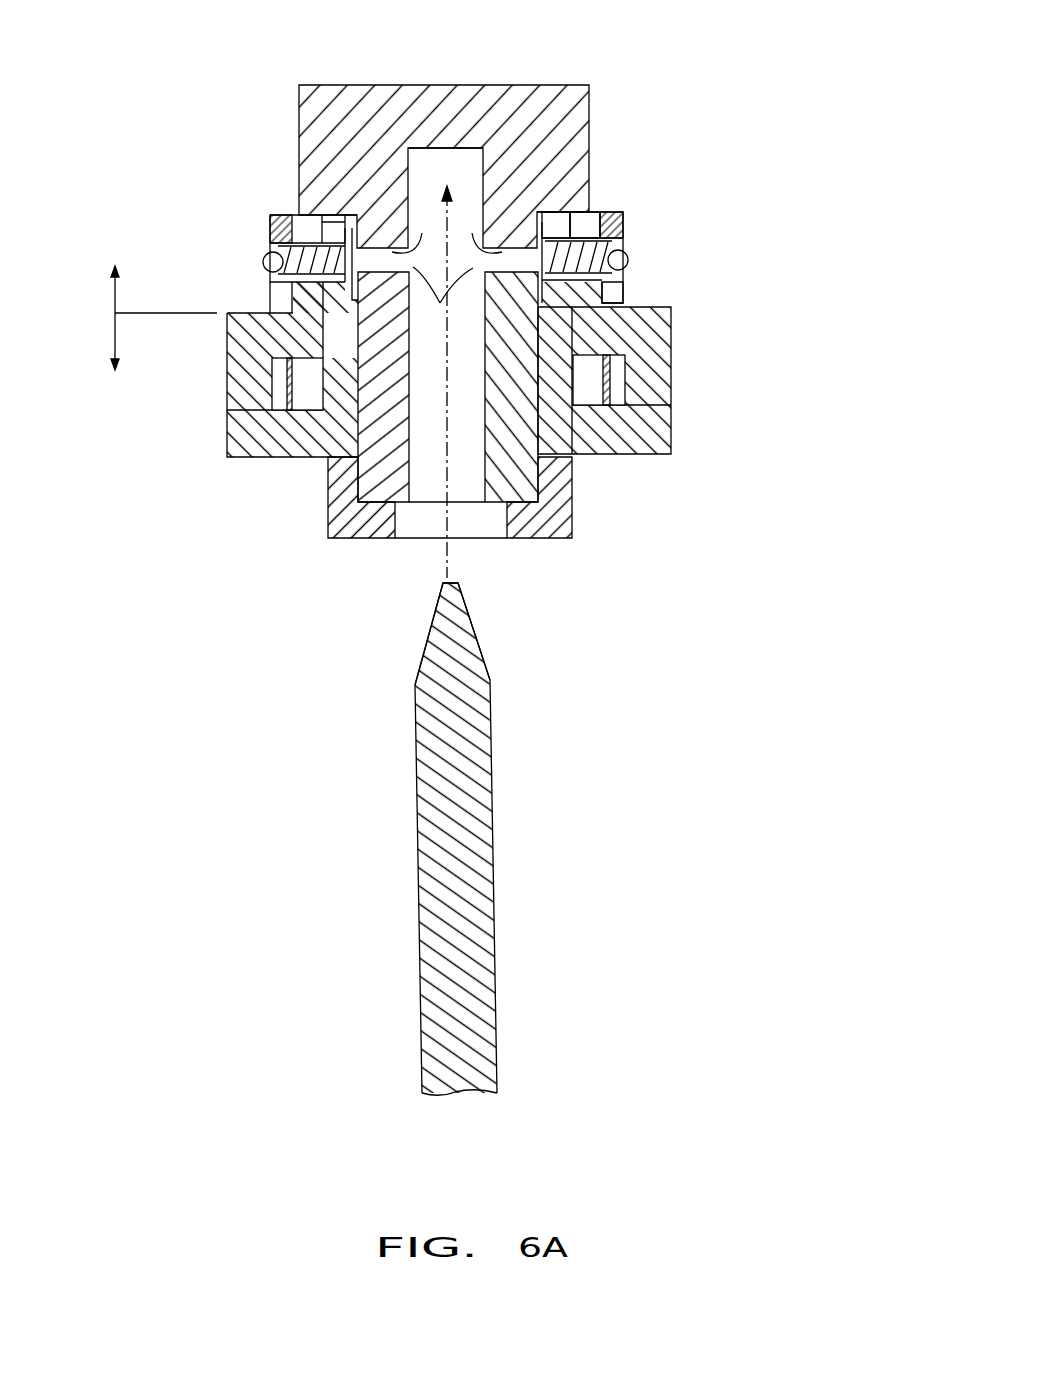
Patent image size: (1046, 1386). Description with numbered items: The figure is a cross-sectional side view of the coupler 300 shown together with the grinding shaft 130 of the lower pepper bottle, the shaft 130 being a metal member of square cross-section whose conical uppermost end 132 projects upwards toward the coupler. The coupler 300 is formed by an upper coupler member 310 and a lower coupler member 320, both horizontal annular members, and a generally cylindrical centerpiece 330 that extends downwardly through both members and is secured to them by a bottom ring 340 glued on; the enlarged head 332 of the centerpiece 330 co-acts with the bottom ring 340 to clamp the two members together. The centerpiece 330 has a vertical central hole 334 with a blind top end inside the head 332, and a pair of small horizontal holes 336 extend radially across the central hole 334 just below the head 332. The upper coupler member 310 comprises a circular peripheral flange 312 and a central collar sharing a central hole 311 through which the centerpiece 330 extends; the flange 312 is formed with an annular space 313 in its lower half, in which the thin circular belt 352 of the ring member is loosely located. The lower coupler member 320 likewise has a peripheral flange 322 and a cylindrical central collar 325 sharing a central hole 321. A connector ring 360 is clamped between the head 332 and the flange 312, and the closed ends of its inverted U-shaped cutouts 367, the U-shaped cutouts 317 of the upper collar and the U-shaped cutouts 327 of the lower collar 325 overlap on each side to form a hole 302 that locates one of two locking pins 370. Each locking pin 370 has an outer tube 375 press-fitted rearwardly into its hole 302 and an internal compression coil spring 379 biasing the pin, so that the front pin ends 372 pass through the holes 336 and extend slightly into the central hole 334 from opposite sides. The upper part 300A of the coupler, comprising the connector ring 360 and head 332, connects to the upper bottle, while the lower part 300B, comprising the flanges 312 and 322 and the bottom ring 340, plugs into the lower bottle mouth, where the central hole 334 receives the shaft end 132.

The coupler 300 is at (183, 141).
The upper part 300A is at (156, 294).
The lower part 300B is at (121, 382).
The centerpiece 330 is at (467, 331).
The enlarged head 332 is at (595, 160).
The central hole 334 is at (407, 163).
The small horizontal holes 336 is at (447, 228).
The front pin end 372 is at (443, 382).
The outer tube 375 is at (279, 254).
The internal compression coil spring 379 is at (308, 267).
The hole 302 is at (268, 262).
The connector ring 360 is at (637, 169).
The U-shaped cutouts 317 is at (590, 222).
The U-shaped cutouts 327 is at (556, 225).
The locking pin 370 is at (643, 257).
The inverted U-shaped cutouts 367 is at (617, 292).
The upper coupler member 310 is at (506, 402).
The central collar 325 is at (300, 295).
The peripheral flange 312 is at (237, 370).
The annular space 313 is at (283, 412).
The central hole 311 is at (325, 338).
The circular belt 352 is at (607, 397).
The lower coupler member 320 is at (672, 426).
The central hole 321 is at (363, 450).
The peripheral flange 322 is at (638, 450).
The bottom ring 340 is at (343, 522).
The central operating shaft 130 is at (391, 839).
The conical uppermost end 132 is at (443, 636).